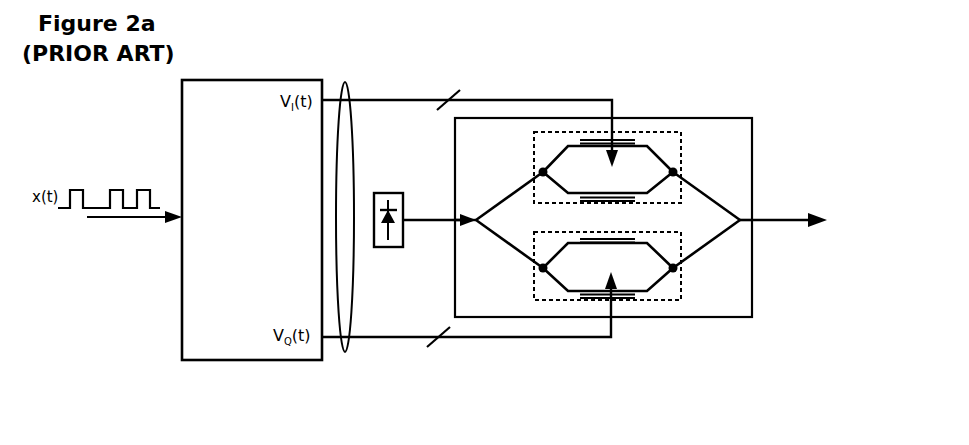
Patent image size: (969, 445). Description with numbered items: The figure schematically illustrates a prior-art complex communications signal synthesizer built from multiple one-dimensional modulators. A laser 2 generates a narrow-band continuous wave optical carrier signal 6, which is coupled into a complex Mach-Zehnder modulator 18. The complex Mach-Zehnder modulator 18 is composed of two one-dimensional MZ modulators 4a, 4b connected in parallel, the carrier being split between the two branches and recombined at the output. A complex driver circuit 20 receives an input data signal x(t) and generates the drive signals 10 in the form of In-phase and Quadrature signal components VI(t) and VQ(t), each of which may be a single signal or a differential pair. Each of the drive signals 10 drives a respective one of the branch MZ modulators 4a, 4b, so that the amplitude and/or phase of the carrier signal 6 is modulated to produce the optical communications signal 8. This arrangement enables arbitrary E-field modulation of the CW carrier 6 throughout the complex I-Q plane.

The complex driver circuit 20 is at (248, 140).
The drive signal 10 is at (346, 352).
The laser 2 is at (392, 193).
The continuous wave optical carrier signal 6 is at (438, 222).
The complex Mach-Zehnder modulator 18 is at (608, 200).
The one-dimensional MZ modulator 4a is at (681, 142).
The one-dimensional MZ modulator 4b is at (681, 288).
The optical communications signal 8 is at (768, 220).